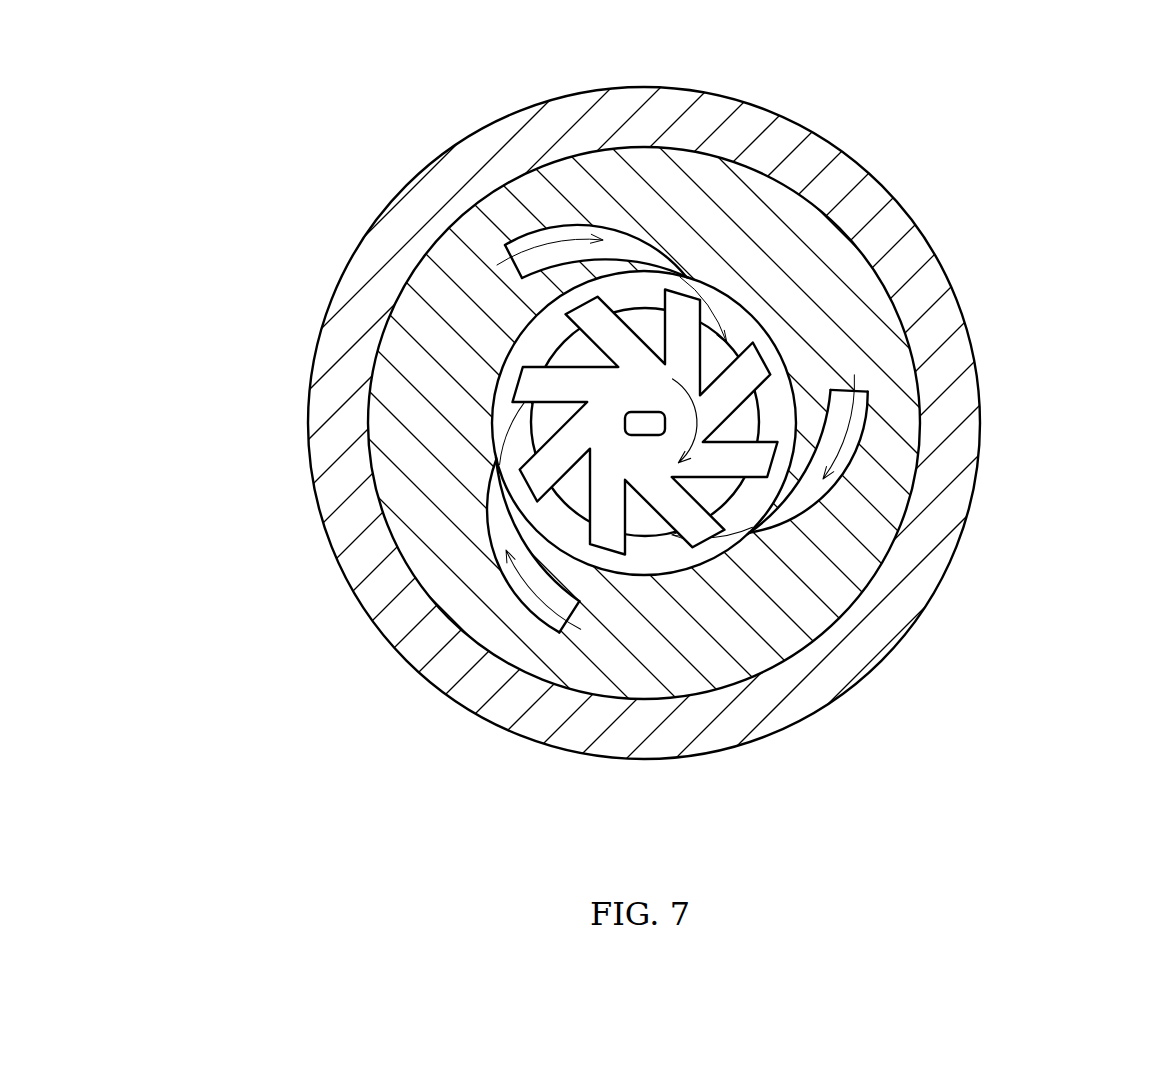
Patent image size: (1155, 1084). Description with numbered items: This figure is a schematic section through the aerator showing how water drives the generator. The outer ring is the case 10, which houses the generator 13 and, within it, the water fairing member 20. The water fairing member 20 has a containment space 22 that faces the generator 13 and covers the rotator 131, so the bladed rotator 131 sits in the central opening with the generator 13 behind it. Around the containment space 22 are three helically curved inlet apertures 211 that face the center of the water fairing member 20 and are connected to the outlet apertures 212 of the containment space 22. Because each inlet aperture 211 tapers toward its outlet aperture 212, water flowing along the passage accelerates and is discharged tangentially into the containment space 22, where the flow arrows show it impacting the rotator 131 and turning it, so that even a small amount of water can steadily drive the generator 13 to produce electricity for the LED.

The case 10 is at (808, 724).
The water fairing member 20 is at (428, 603).
The containment space 22 is at (755, 507).
The inlet apertures 211 is at (522, 256).
The outlet apertures 212 is at (680, 277).
The generator 13 is at (784, 425).
The rotator 131 is at (772, 360).